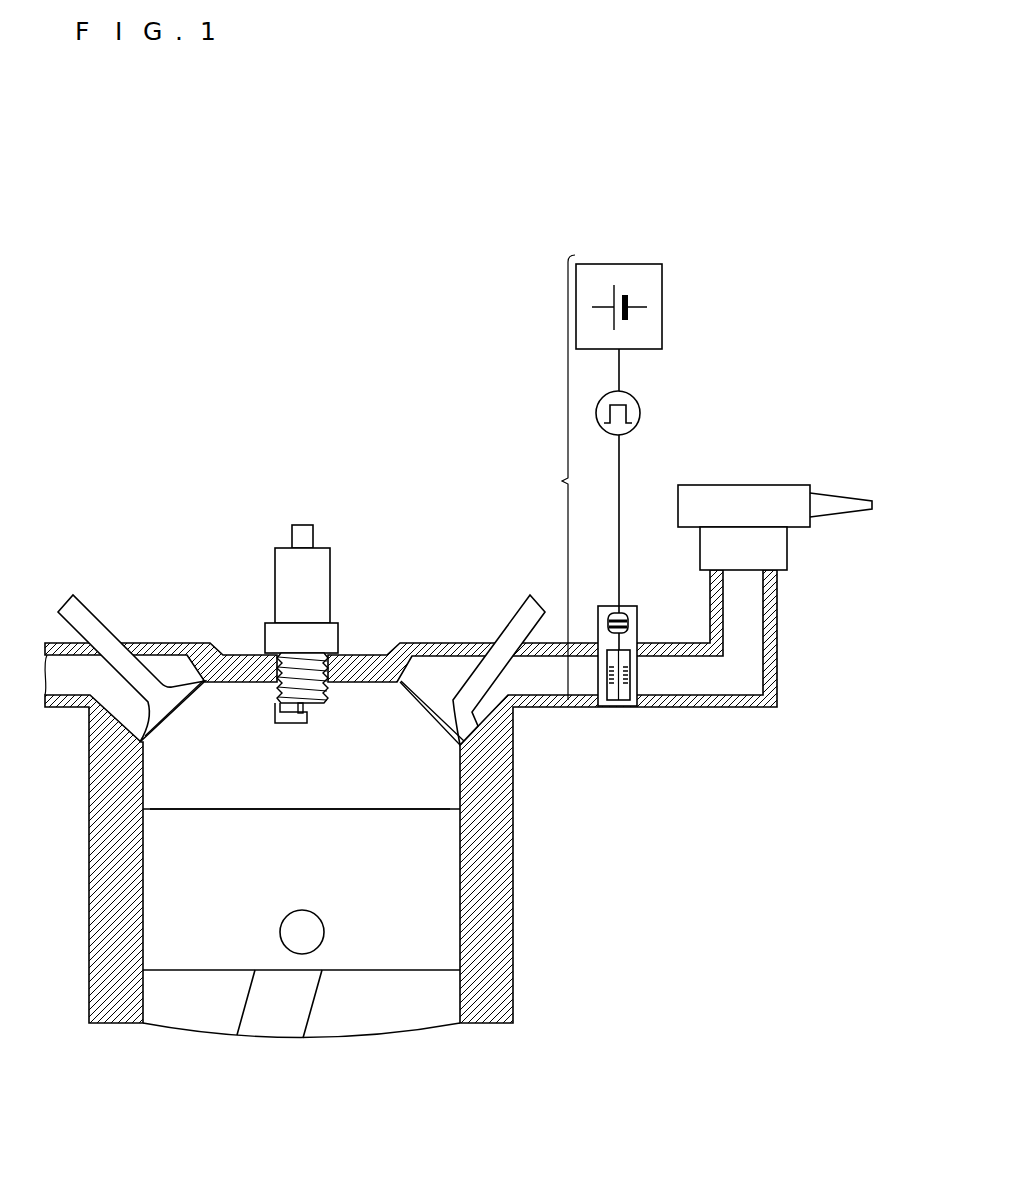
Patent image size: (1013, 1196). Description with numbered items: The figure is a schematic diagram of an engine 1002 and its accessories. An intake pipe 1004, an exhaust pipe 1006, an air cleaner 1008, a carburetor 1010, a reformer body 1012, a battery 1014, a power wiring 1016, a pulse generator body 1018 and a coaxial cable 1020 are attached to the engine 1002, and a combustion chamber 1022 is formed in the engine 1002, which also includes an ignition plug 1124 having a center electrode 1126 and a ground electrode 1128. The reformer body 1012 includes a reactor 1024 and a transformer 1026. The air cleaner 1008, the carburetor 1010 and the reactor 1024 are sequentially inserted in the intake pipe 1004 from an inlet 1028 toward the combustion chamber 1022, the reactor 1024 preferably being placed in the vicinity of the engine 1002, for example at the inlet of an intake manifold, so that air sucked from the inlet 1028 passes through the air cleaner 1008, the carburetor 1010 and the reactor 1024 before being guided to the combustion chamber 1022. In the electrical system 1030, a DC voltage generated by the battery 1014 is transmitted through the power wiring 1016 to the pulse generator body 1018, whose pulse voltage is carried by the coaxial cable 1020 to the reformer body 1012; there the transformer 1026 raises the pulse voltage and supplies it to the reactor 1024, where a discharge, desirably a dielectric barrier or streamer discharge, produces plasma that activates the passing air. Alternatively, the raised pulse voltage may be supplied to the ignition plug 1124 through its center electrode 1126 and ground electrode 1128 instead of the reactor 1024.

The engine 1002 is at (515, 903).
The intake pipe 1004 is at (588, 708).
The exhaust pipe 1006 is at (62, 707).
The air cleaner 1008 is at (768, 485).
The carburetor 1010 is at (787, 550).
The reformer body 1012 is at (637, 677).
The battery 1014 is at (662, 305).
The power wiring 1016 is at (619, 367).
The pulse generator body 1018 is at (640, 413).
The coaxial cable 1020 is at (619, 460).
The combustion chamber 1022 is at (330, 757).
The reactor 1024 is at (625, 652).
The transformer 1026 is at (623, 608).
The inlet 1028 is at (873, 500).
The electrical system 1030 is at (537, 477).
The ignition plug 1124 is at (330, 585).
The center electrode 1126 is at (305, 710).
The ground electrode 1128 is at (292, 725).